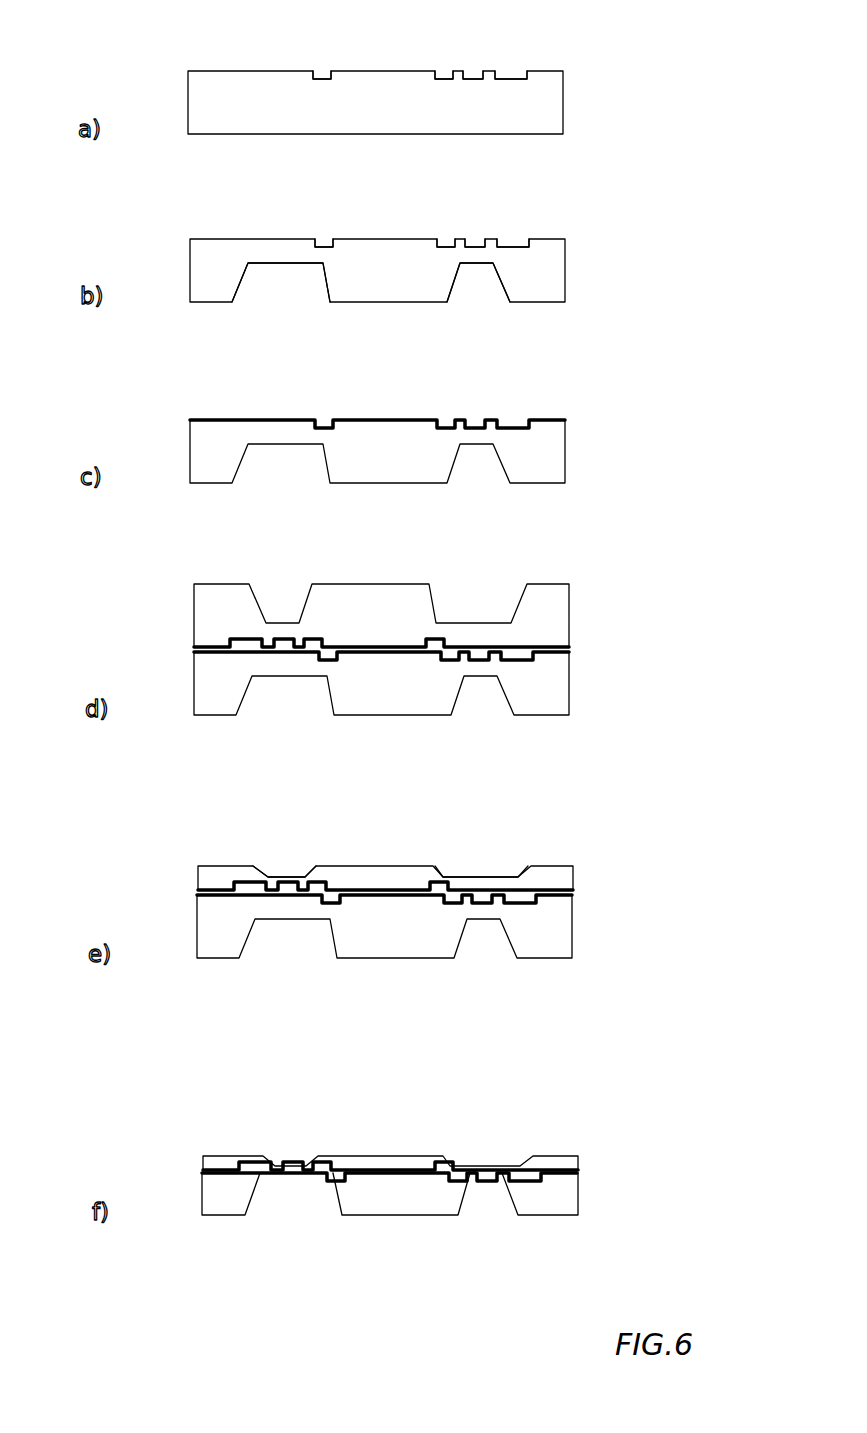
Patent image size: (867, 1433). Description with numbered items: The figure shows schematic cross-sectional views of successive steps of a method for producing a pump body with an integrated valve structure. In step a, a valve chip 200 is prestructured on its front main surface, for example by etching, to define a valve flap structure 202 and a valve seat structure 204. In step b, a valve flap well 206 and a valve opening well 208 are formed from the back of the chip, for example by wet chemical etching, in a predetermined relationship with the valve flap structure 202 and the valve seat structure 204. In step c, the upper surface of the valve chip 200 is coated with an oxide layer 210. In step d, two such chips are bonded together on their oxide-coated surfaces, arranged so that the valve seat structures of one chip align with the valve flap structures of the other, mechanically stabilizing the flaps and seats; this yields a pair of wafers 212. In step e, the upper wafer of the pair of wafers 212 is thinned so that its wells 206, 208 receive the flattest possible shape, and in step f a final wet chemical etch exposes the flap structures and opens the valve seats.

The valve chip 200 is at (563, 100).
The valve flap structure 202 is at (323, 72).
The valve seat structure 204 is at (474, 72).
The valve flap well 206 is at (280, 287).
The valve opening well 208 is at (473, 287).
The oxide layer 210 is at (388, 418).
The pair of wafers 212 is at (620, 584).